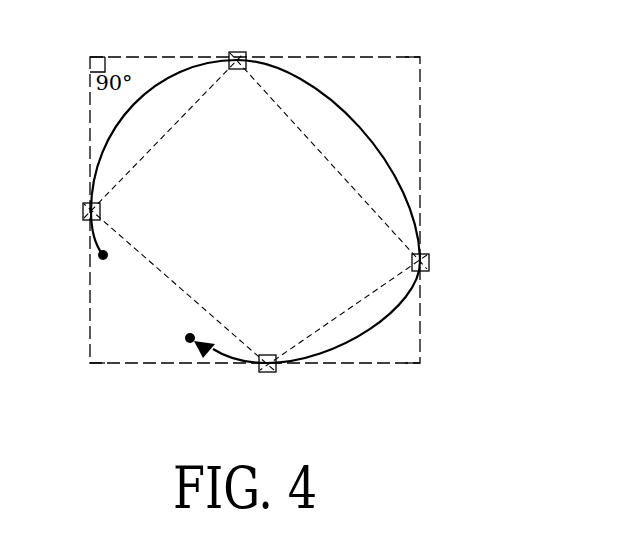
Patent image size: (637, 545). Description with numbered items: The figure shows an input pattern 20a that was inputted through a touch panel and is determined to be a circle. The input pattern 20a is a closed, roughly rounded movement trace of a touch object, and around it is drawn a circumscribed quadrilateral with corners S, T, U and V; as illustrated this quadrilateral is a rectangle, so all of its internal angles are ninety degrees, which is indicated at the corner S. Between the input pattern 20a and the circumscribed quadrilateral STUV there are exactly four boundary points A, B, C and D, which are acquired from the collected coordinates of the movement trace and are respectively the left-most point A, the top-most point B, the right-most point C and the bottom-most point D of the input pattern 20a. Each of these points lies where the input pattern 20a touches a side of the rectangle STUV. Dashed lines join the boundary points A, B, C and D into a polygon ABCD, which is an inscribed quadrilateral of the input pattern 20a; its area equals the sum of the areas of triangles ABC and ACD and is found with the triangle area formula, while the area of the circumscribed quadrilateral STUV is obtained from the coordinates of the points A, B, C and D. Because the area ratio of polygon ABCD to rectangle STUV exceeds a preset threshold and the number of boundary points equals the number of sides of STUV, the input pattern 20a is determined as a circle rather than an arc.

The input pattern 20a is at (385, 162).
The boundary point A is at (79, 212).
The boundary point B is at (237, 48).
The boundary point C is at (433, 262).
The boundary point D is at (269, 377).
The corner S of circumscribed quadrilateral S is at (84, 48).
The corner T of circumscribed quadrilateral T is at (423, 48).
The corner U of circumscribed quadrilateral U is at (424, 376).
The corner V of circumscribed quadrilateral V is at (84, 376).